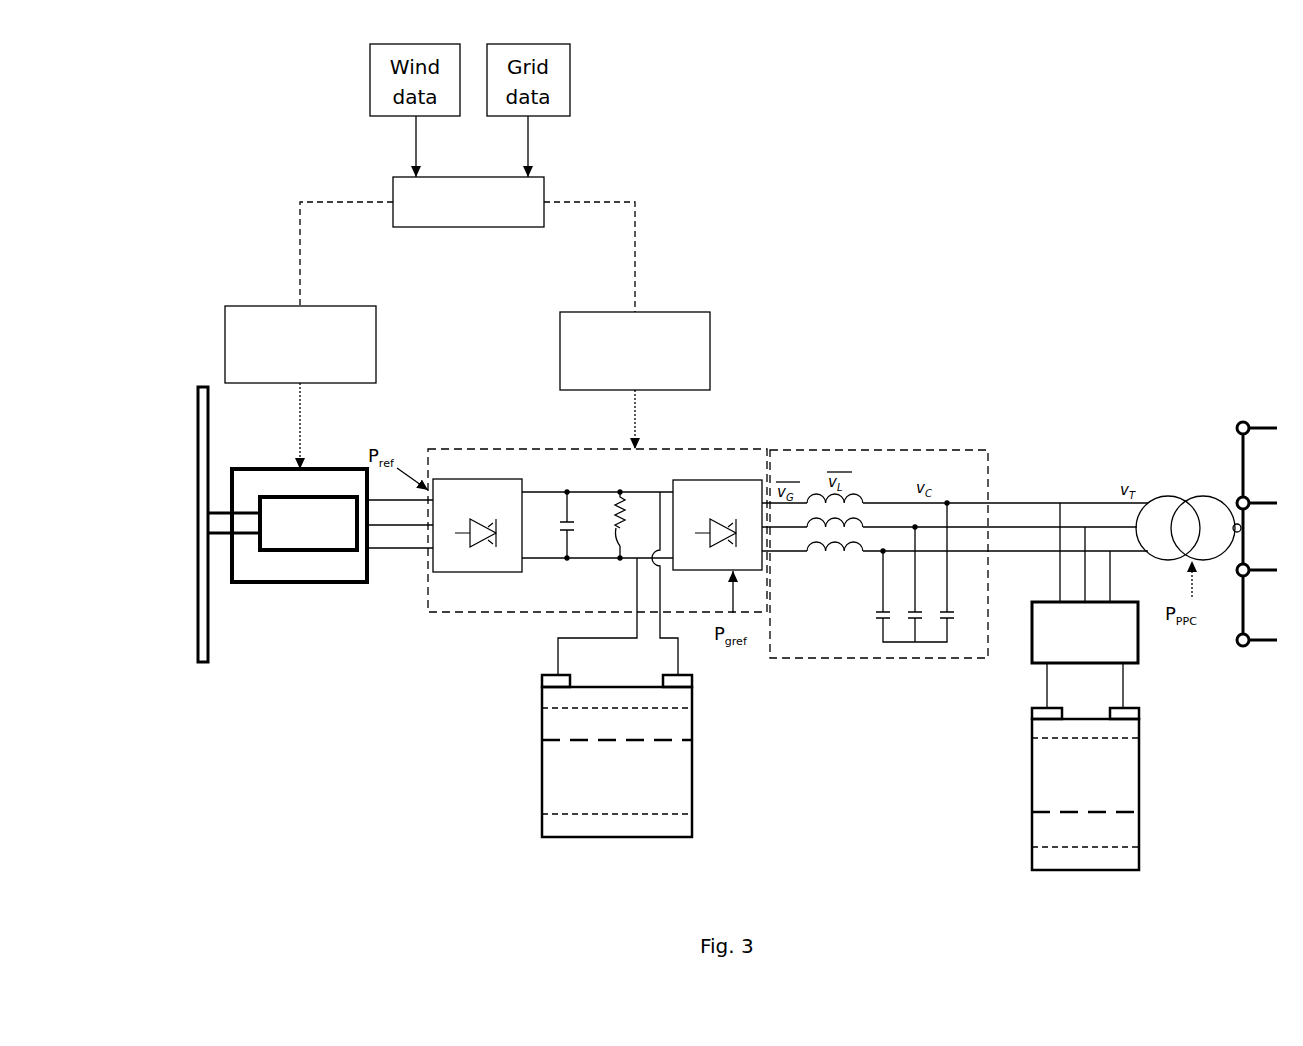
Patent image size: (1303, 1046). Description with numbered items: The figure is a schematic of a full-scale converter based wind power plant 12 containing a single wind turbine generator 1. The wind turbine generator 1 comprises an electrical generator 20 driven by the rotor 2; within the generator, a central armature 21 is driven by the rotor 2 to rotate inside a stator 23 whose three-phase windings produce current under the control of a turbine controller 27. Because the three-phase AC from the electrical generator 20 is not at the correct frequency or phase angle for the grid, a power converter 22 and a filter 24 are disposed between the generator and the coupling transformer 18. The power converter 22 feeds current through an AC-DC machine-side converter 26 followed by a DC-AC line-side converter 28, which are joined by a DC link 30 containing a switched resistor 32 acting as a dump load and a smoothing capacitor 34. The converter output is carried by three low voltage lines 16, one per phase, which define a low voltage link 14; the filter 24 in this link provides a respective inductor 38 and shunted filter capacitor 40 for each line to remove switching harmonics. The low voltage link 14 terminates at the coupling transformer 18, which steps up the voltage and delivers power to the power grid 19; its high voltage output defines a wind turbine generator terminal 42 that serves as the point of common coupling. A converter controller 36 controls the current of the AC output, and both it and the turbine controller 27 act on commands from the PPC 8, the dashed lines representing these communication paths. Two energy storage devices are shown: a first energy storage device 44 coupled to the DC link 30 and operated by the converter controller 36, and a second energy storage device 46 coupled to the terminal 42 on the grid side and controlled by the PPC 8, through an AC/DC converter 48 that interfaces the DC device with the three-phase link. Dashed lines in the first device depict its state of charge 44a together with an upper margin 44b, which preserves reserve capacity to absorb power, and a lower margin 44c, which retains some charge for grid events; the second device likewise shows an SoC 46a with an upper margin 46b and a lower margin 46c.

The wind turbine generator 1 is at (375, 697).
The rotor 2 is at (205, 663).
The PPC 8 is at (423, 227).
The wind power plant 12 is at (915, 274).
The low voltage link 14 is at (1052, 406).
The low voltage lines 16 is at (1105, 527).
The coupling transformer 18 is at (1198, 498).
The power grid 19 is at (1262, 678).
The electrical generator 20 is at (285, 590).
The central armature 21 is at (322, 532).
The power converter 22 is at (445, 603).
The stator 23 is at (260, 478).
The filter 24 is at (832, 637).
The machine-side converter 26 is at (497, 479).
The turbine controller 27 is at (248, 325).
The line-side converter 28 is at (687, 480).
The DC link 30 is at (570, 570).
The switched resistor 32 is at (620, 493).
The smoothing capacitor 34 is at (566, 523).
The converter controller 36 is at (712, 332).
The inductor 38 is at (860, 520).
The filter capacitor 40 is at (947, 620).
The wind turbine generator terminal 42 is at (1236, 524).
The first energy storage device 44 is at (568, 792).
The state of charge 44a is at (542, 740).
The upper margin 44b is at (542, 708).
The lower margin 44c is at (542, 814).
The second energy storage device 46 is at (1051, 826).
The SoC 46a is at (1032, 812).
The upper margin 46b is at (1032, 739).
The lower margin 46c is at (1032, 847).
The AC/DC converter 48 is at (1138, 632).